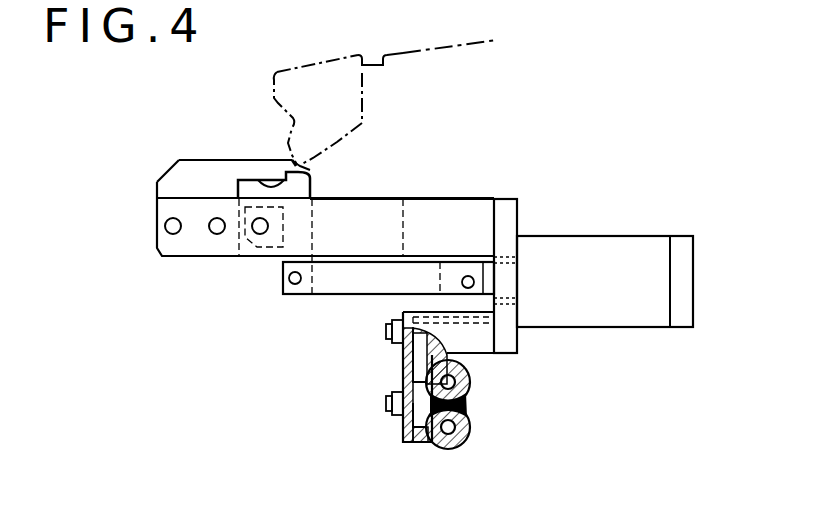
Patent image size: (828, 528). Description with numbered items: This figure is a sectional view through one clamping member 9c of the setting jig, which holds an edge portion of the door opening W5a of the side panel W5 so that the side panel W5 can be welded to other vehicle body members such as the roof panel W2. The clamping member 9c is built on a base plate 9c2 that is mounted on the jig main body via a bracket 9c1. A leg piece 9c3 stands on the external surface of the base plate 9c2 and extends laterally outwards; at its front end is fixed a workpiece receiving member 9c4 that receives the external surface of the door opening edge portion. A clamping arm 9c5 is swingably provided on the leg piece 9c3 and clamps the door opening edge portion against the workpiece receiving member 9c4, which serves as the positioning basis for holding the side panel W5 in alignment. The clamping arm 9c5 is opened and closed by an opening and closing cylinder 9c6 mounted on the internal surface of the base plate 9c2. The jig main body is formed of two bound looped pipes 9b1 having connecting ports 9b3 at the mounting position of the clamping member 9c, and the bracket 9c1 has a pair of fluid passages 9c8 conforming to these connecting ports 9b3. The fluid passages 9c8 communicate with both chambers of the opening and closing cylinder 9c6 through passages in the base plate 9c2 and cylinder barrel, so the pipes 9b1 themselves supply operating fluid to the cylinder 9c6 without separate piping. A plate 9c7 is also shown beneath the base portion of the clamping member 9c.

The clamping member 9c is at (215, 262).
The bracket 9c1 is at (398, 433).
The base plate 9c2 is at (512, 222).
The leg piece 9c3 is at (457, 212).
The workpiece receiving member 9c4 is at (292, 168).
The clamping arm 9c5 is at (310, 168).
The opening and closing cylinder 9c6 is at (637, 242).
The lower plate 9c7 is at (350, 288).
The fluid passages 9c8 is at (399, 409).
The looped pipes 9b1 is at (473, 423).
The connecting ports 9b3 is at (430, 443).
The side panel W5 is at (290, 56).
The door opening W5a is at (258, 165).
The roof panel W2 is at (478, 43).